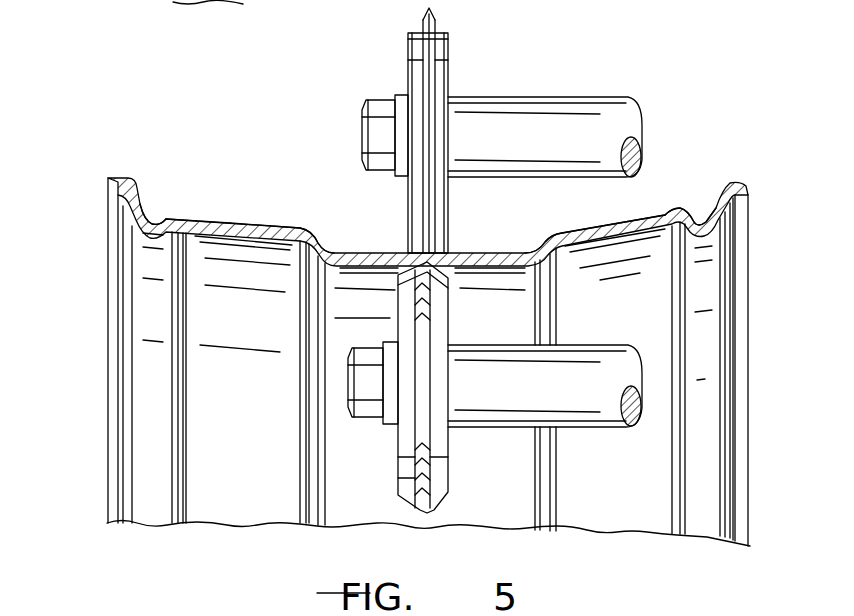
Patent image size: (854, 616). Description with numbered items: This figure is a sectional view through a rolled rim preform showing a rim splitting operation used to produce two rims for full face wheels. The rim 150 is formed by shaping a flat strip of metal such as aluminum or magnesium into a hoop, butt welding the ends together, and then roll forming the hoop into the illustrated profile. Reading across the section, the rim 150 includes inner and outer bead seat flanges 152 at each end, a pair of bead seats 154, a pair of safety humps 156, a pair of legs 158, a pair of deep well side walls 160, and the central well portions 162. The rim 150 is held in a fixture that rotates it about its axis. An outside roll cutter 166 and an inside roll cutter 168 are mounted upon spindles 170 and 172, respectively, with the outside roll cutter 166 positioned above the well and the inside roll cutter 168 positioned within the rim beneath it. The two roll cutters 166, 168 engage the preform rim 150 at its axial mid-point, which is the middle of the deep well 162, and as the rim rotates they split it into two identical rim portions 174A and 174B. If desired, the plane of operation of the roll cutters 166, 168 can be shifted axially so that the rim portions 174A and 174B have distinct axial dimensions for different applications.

The rim 150 is at (80, 245).
The bead seat flanges 152 is at (120, 180).
The bead seats 154 is at (150, 212).
The safety humps 156 is at (182, 215).
The legs 158 is at (280, 226).
The deep well side walls 160 is at (327, 248).
The well portions 162 is at (338, 256).
The outside roll cutter 166 is at (437, 21).
The inside roll cutter 168 is at (440, 494).
The spindle 170 is at (550, 97).
The spindle 172 is at (576, 398).
The rim portion 174A is at (310, 155).
The rim portion 174B is at (690, 110).